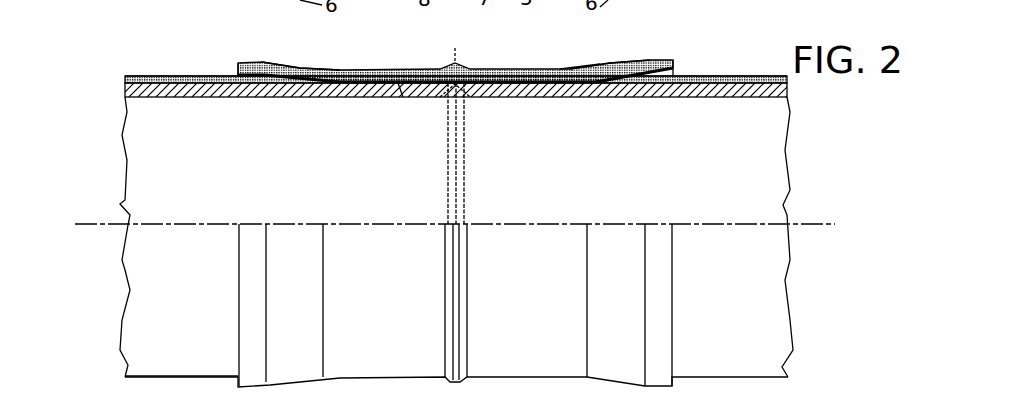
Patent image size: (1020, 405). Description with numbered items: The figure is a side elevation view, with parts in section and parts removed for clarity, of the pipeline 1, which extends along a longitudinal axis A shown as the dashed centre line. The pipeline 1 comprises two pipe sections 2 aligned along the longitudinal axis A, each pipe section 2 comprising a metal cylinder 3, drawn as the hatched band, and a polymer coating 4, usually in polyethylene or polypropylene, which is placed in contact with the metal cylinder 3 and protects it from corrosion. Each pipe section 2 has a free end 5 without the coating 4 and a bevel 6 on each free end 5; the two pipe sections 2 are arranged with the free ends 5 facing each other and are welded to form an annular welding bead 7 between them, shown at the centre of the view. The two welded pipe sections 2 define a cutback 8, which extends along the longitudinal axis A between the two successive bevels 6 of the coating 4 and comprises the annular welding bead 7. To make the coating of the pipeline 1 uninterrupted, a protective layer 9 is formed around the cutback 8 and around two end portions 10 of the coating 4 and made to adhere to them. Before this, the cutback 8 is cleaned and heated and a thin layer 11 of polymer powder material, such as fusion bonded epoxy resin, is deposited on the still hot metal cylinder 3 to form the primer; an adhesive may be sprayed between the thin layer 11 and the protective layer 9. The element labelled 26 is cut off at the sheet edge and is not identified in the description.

The pipeline 1 is at (108, 83).
The pipe section 2 is at (112, 308).
The metal cylinder 3 is at (234, 88).
The polymer coating 4 is at (138, 77).
The free end 5 is at (400, 66).
The bevel 6 is at (281, 71).
The annular welding bead 7 is at (470, 86).
The cutback 8 is at (412, 78).
The protective layer 9 is at (568, 72).
The end portion 10 is at (256, 64).
The thin layer 11 is at (400, 84).
The longitudinal axis A is at (823, 224).
The element 26 is at (181, 390).